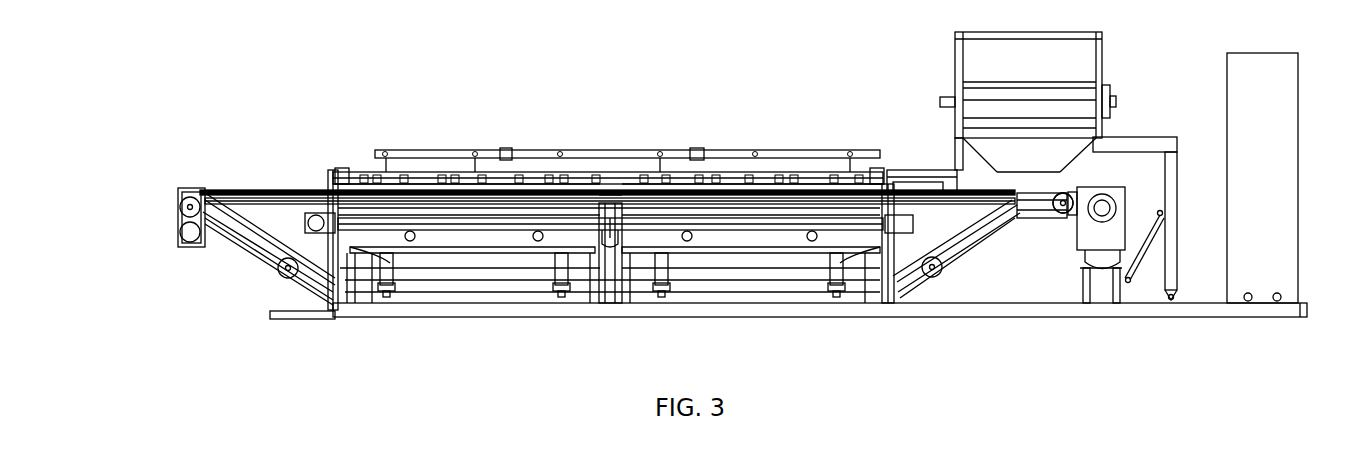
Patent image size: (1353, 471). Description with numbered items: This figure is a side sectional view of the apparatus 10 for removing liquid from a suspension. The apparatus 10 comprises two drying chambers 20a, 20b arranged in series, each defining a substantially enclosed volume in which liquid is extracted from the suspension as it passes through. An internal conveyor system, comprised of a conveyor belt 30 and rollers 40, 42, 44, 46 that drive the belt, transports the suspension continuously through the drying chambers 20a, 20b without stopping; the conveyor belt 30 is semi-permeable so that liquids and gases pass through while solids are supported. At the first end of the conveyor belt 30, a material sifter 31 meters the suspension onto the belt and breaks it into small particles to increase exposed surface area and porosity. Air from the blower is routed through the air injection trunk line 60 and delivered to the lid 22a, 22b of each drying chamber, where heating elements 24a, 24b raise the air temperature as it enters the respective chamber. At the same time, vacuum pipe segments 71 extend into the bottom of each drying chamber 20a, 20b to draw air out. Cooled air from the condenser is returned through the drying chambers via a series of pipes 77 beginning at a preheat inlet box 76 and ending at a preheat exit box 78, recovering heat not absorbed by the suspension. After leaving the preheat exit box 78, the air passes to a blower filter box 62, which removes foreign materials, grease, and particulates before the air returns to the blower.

The apparatus 10 is at (200, 130).
The material sifter 31 is at (1088, 32).
The lid 22b is at (341, 168).
The heating element 24b is at (462, 172).
The heating element 24a is at (740, 172).
The air injection trunk line 60 is at (788, 150).
The lid 22a is at (876, 168).
The preheat inlet box 76 is at (316, 212).
The roller 40 is at (178, 217).
The conveyor belt 30 is at (245, 247).
The roller 42 is at (285, 283).
The drying chamber 20b is at (358, 215).
The drying chamber 20a is at (862, 215).
The vacuum pipe segment 71 is at (536, 241).
The pipes 77 is at (582, 225).
The preheat exit box 78 is at (895, 235).
The roller 44 is at (925, 285).
The roller 46 is at (1040, 215).
The blower filter box 62 is at (1120, 248).